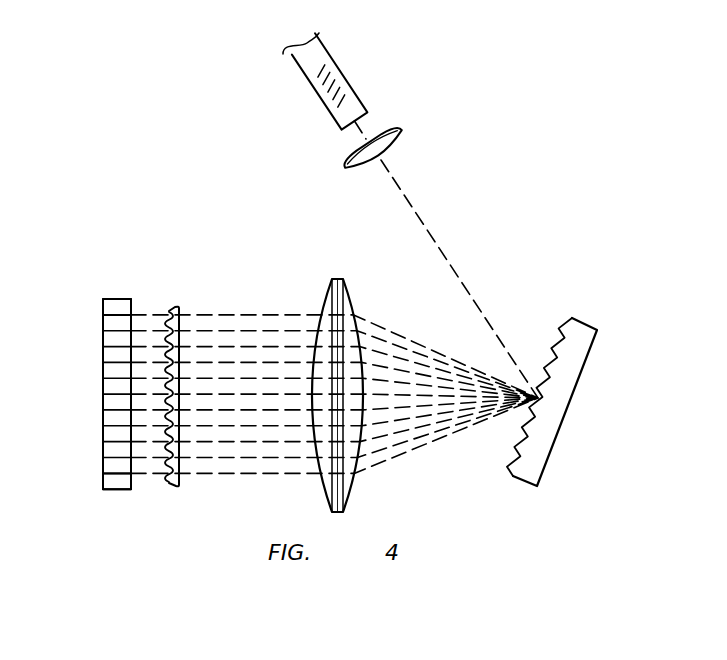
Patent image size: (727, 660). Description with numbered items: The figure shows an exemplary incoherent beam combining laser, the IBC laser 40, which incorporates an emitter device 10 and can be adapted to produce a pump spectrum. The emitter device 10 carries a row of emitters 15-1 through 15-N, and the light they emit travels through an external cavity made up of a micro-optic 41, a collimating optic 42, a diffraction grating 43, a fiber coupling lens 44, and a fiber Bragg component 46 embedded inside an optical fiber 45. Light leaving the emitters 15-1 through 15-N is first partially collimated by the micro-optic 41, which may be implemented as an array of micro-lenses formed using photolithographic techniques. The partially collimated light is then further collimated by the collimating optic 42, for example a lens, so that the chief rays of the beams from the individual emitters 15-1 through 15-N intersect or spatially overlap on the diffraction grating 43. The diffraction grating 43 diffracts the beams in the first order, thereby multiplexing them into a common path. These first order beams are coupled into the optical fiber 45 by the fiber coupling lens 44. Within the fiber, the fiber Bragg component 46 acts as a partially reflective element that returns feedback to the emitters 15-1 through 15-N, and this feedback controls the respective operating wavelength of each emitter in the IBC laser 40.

The IBC laser 40 is at (195, 160).
The emitter device 10 is at (117, 298).
The emitter 15-1 is at (102, 315).
The emitter 15-N is at (102, 474).
The micro-optic 41 is at (174, 307).
The collimating optic 42 is at (337, 279).
The diffraction grating 43 is at (569, 406).
The fiber coupling lens 44 is at (399, 134).
The optical fiber 45 is at (294, 63).
The fiber Bragg component 46 is at (338, 81).